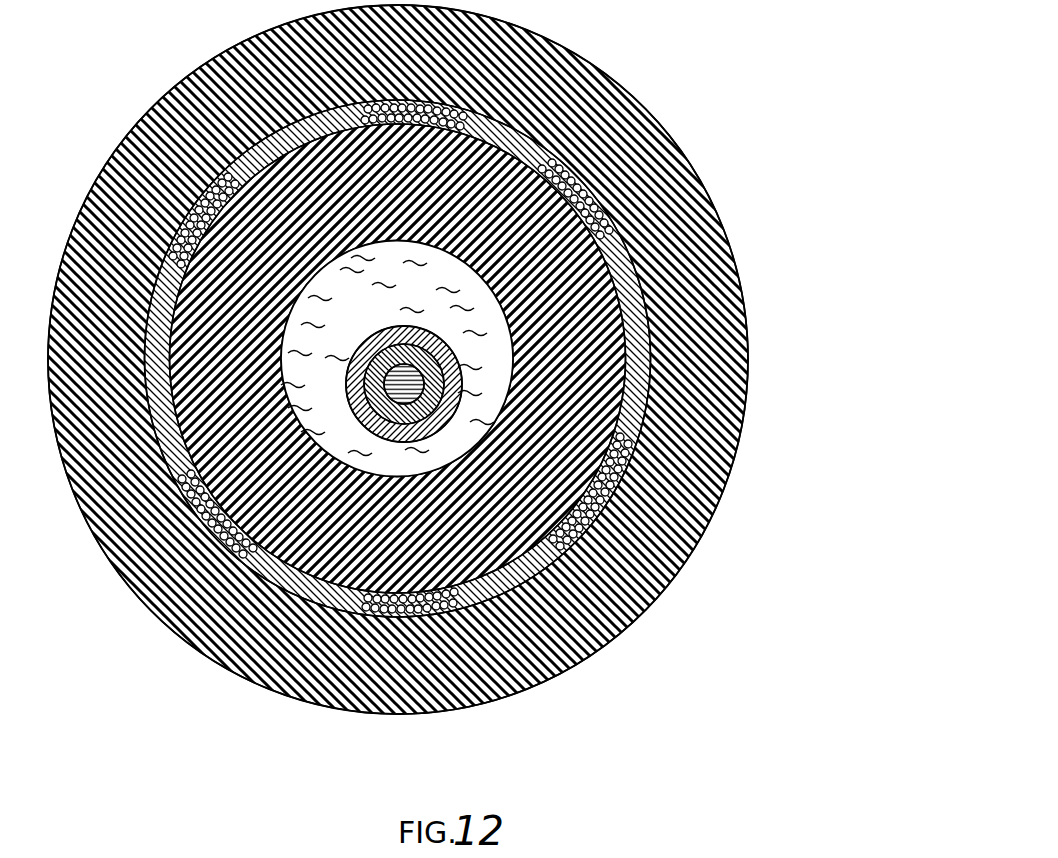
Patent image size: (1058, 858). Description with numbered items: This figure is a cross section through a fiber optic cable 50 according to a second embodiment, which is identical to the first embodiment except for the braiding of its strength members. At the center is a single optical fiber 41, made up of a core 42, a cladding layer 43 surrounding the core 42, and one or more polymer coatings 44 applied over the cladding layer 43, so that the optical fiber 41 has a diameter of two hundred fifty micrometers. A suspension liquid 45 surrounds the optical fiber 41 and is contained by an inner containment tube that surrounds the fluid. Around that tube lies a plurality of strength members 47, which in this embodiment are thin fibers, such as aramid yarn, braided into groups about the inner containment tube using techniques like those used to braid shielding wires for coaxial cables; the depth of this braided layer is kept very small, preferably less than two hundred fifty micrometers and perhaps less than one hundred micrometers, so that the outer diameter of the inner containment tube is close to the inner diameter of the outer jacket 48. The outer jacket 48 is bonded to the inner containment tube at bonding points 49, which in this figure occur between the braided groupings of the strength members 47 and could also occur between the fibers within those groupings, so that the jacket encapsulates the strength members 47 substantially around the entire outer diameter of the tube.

The fiber optic cable 50 is at (789, 124).
The outer jacket 48 is at (700, 262).
The bonding points 49 is at (297, 148).
The strength members 47 is at (203, 187).
The suspension liquid 45 is at (369, 294).
The optical fiber 41 is at (443, 333).
The core 42 is at (415, 375).
The cladding layer 43 is at (438, 392).
The polymer coatings 44 is at (445, 413).